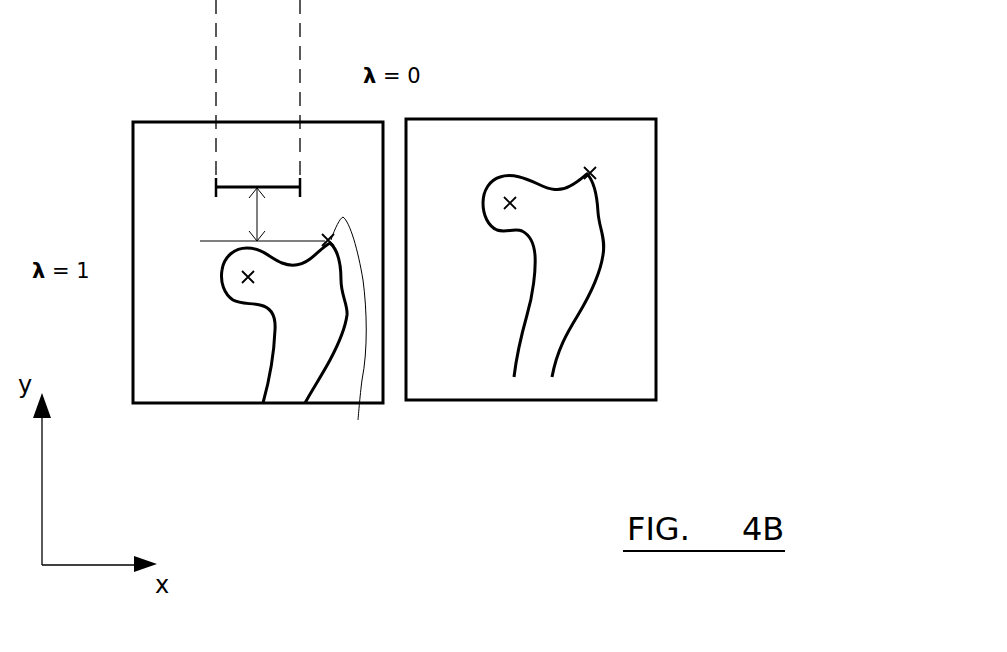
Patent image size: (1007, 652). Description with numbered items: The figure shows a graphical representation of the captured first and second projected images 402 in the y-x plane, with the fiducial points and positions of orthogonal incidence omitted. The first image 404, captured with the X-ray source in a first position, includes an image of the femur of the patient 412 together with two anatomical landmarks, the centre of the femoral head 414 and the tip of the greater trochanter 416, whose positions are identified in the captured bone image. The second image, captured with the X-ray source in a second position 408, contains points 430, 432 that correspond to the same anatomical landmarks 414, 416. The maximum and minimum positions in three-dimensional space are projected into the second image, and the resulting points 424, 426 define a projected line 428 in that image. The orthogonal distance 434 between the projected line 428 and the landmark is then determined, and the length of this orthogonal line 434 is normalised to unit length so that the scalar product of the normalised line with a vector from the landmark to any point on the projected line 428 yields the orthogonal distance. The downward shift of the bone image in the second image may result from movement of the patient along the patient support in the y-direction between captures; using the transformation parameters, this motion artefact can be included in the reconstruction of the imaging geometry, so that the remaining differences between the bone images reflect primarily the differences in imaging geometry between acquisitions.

The first and second projected images 402 is at (725, 163).
The first image 404 is at (657, 317).
The second position 408 is at (192, 403).
The femur of the patient 412 is at (607, 243).
The centre of the femoral head 414 is at (510, 203).
The tip of the greater trochanter 416 is at (590, 173).
The point corresponding to maximum position 424 is at (216, 183).
The point corresponding to minimum position 426 is at (300, 180).
The projected line 428 is at (237, 187).
The corresponding landmark point 430 is at (358, 420).
The corresponding landmark point 432 is at (248, 277).
The orthogonal distance 434 is at (257, 211).